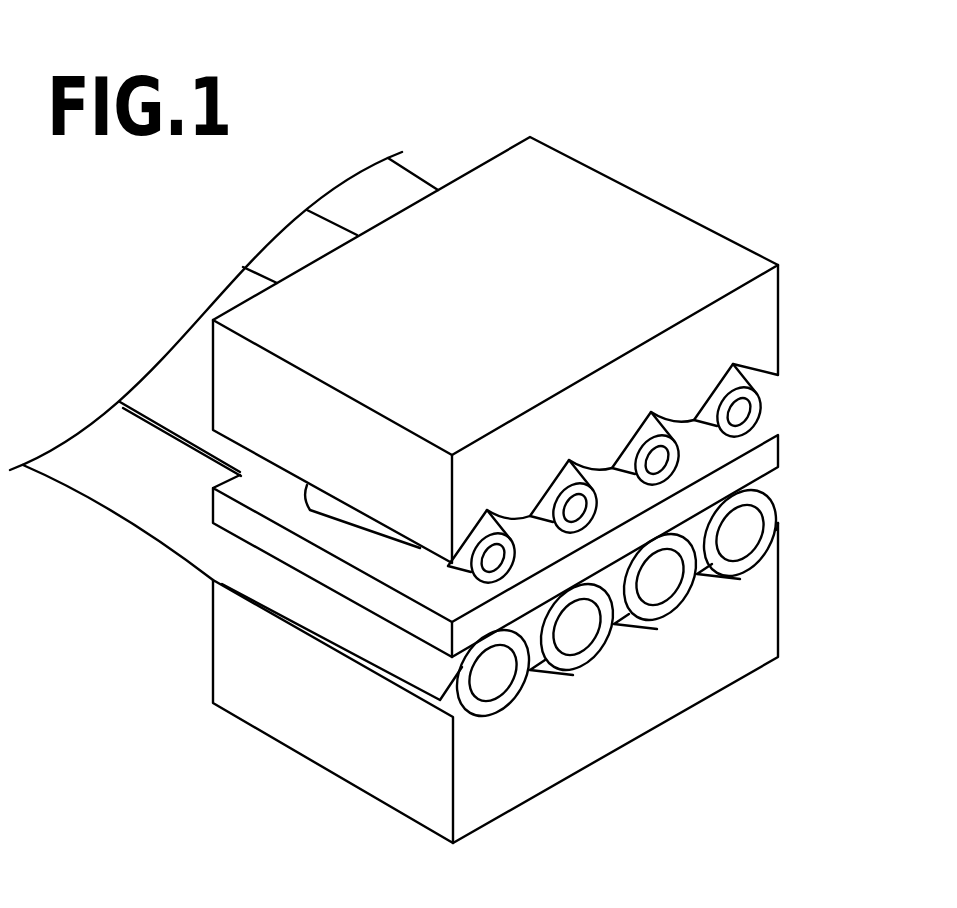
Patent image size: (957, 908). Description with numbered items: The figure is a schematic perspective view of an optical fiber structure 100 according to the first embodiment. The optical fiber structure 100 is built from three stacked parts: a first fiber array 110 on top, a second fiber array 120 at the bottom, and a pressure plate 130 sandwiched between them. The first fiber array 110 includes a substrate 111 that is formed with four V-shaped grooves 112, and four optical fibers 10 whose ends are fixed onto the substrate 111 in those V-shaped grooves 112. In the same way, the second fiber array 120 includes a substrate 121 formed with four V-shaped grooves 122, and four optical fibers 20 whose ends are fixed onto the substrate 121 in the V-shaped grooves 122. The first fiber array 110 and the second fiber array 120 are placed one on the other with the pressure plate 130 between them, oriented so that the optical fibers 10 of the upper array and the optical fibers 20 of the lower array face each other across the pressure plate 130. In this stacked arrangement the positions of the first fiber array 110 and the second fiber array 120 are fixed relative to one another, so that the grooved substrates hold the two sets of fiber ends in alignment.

The optical fiber structure 100 is at (491, 84).
The first fiber array 110 is at (557, 325).
The substrate 111 is at (596, 190).
The V-shaped grooves 112 is at (737, 367).
The optical fibers 10 is at (512, 517).
The pressure plate 130 is at (782, 448).
The second fiber array 120 is at (557, 710).
The substrate 121 is at (372, 790).
The V-shaped grooves 122 is at (747, 583).
The optical fibers 20 is at (773, 505).